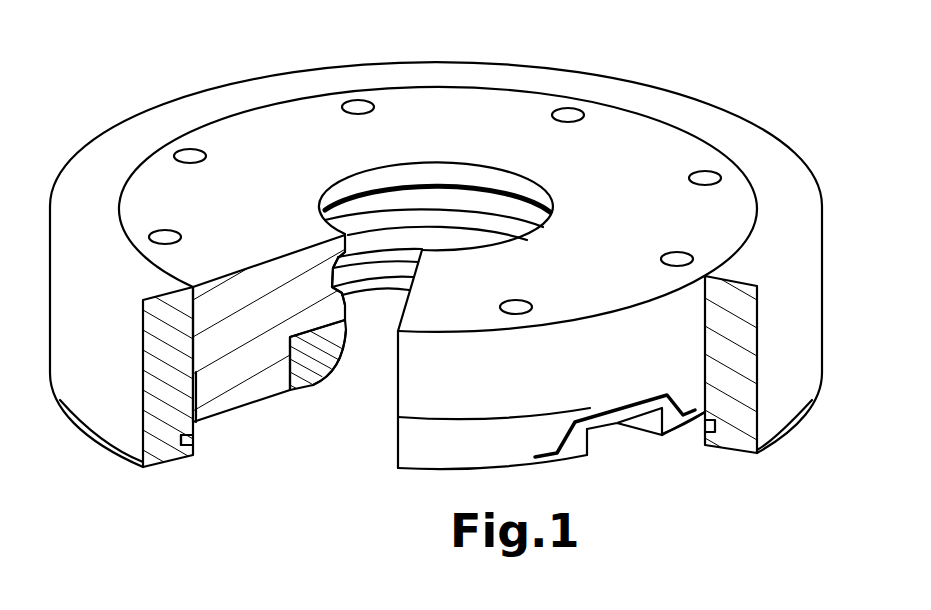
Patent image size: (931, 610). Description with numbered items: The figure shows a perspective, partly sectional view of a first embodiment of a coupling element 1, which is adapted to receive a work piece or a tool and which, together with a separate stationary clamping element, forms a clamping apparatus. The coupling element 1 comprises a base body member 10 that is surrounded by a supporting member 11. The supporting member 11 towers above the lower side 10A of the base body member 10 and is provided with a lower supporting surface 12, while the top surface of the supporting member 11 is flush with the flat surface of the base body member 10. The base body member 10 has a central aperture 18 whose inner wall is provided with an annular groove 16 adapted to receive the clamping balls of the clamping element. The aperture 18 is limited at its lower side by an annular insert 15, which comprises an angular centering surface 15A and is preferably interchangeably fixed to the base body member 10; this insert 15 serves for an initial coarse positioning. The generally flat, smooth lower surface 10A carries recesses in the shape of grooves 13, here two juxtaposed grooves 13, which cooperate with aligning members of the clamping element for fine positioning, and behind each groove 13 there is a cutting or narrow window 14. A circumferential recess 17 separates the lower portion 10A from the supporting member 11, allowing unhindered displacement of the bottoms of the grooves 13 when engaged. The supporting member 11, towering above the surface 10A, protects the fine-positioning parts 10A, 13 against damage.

The coupling element 1 is at (740, 86).
The base body member 10 is at (463, 122).
The lower surface of the base body member 10A is at (248, 420).
The supporting member 11 is at (342, 78).
The lower supporting surface 12 is at (168, 467).
The grooves 13 is at (612, 443).
The narrow window 14 is at (620, 408).
The annular insert 15 is at (312, 358).
The angular centering surface 15A is at (338, 368).
The annular groove 16 is at (331, 277).
The circumferential recess 17 is at (193, 425).
The central aperture 18 is at (357, 170).